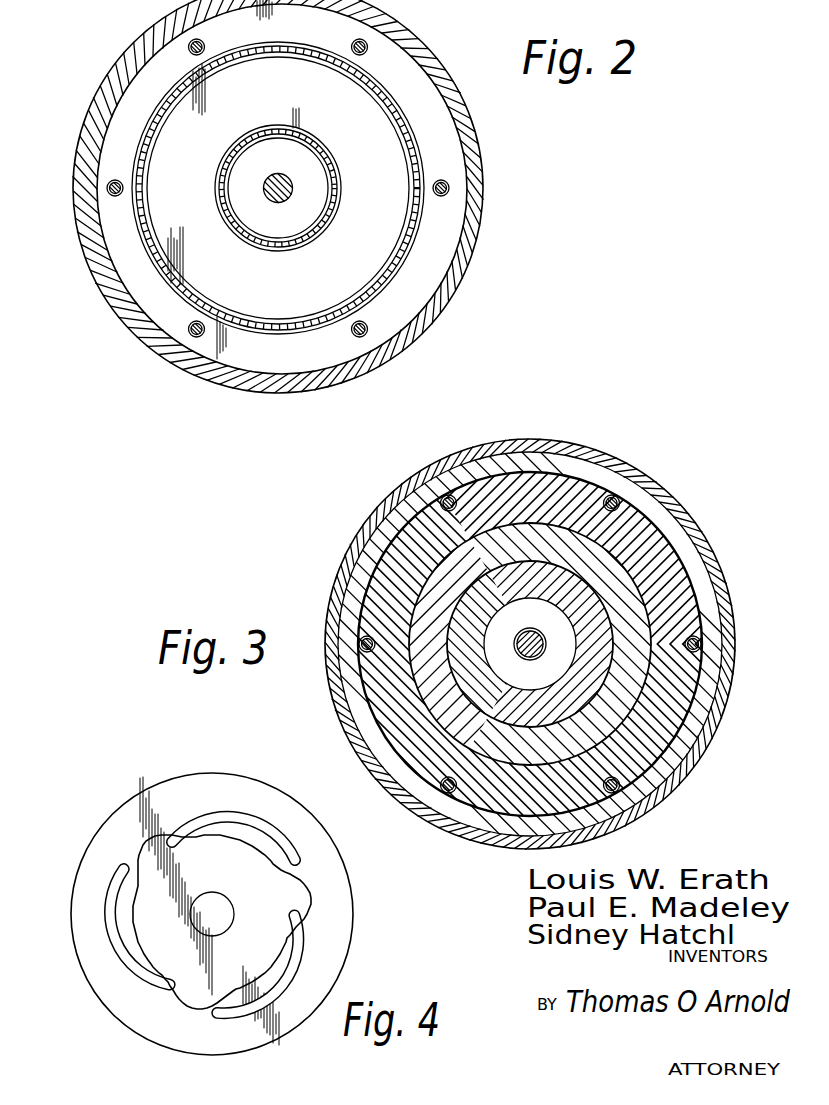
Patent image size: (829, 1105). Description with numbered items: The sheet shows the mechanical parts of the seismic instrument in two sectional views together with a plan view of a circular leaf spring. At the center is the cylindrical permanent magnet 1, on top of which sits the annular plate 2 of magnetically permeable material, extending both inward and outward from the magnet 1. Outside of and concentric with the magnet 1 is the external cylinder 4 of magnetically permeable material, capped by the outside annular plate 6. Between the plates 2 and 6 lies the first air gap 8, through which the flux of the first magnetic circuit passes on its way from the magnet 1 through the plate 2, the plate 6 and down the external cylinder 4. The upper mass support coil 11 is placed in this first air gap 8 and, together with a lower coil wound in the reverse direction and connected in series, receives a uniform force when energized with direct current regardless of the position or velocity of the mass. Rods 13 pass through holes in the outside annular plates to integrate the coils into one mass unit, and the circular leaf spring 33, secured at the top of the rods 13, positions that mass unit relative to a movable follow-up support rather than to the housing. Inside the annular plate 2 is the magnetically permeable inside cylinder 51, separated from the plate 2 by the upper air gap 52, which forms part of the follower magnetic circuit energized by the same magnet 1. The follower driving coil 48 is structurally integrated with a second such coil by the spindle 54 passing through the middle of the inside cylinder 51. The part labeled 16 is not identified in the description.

In FIG. 3, the cylindrical permanent magnet 1 is at (687, 565).
In FIG. 2, the annular plate 2 is at (380, 189).
In FIG. 3, the external cylinder 4 is at (703, 580).
In FIG. 2, the outside annular plate 6 is at (440, 124).
In FIG. 2, the first air gap 8 is at (139, 152).
In FIG. 2, the upper mass support coil 11 is at (147, 127).
In FIG. 2, the rods 13 is at (367, 46).
In FIG. 3, the rods 13 is at (622, 501).
In FIG. 2, the outer rim 16 is at (480, 179).
In FIG. 3, the outer rim 16 is at (724, 600).
In FIG. 4, the upper spring 33 is at (333, 878).
In FIG. 2, the follower driving coil 48 is at (220, 163).
In FIG. 3, the inside cylinder 51 is at (668, 540).
In FIG. 2, the upper air gap 52 is at (233, 171).
In FIG. 2, the spindle 54 is at (291, 184).
In FIG. 3, the spindle 54 is at (539, 631).